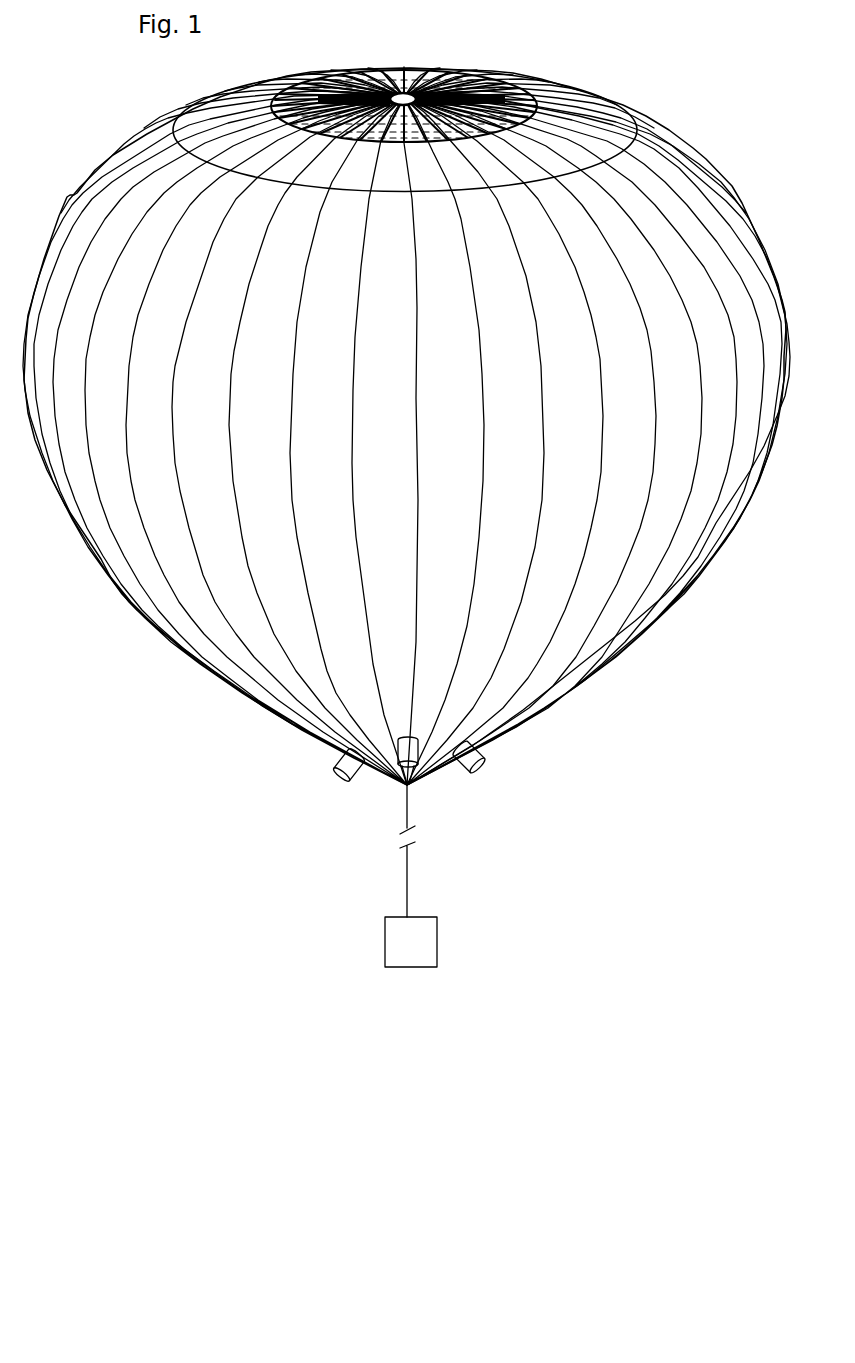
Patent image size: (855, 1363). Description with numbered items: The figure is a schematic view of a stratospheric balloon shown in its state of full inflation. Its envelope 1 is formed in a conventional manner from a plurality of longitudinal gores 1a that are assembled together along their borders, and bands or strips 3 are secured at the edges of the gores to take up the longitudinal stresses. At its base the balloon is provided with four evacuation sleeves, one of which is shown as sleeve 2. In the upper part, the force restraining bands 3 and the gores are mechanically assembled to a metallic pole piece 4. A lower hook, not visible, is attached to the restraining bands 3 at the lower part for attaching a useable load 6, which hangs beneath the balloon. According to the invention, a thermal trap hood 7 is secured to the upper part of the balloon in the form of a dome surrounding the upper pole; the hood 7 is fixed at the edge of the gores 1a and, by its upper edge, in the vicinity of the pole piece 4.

The envelope 1 is at (698, 117).
The gores 1a is at (712, 196).
The evacuation sleeves 2 is at (477, 768).
The bands 3 is at (745, 230).
The metallic pole piece 4 is at (405, 92).
The useable load 6 is at (438, 957).
The thermal trap hood 7 is at (500, 74).